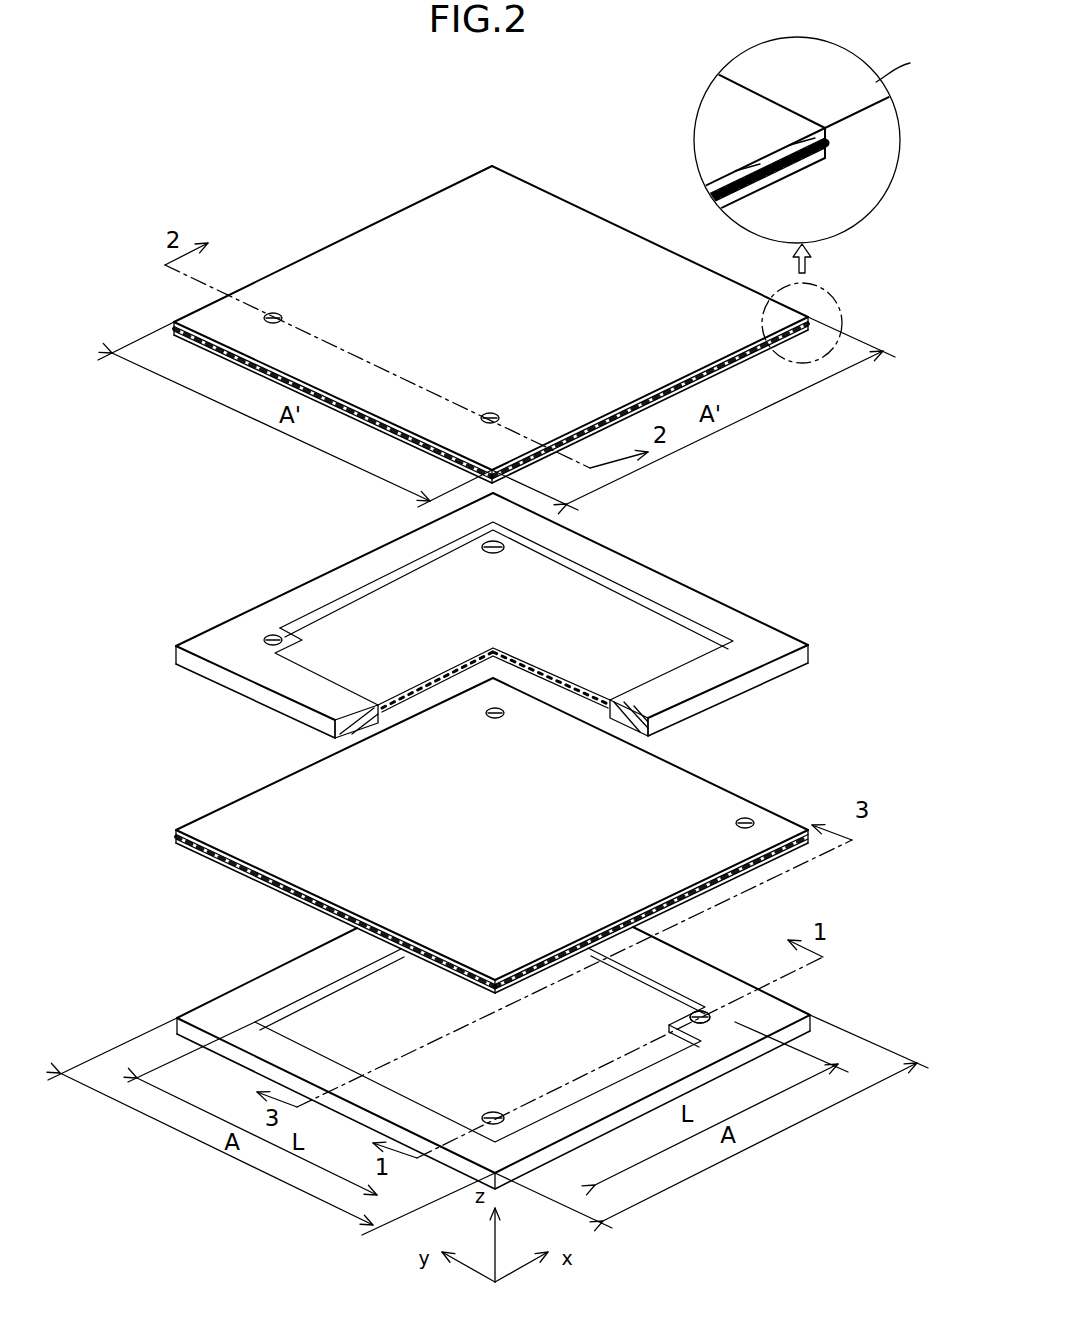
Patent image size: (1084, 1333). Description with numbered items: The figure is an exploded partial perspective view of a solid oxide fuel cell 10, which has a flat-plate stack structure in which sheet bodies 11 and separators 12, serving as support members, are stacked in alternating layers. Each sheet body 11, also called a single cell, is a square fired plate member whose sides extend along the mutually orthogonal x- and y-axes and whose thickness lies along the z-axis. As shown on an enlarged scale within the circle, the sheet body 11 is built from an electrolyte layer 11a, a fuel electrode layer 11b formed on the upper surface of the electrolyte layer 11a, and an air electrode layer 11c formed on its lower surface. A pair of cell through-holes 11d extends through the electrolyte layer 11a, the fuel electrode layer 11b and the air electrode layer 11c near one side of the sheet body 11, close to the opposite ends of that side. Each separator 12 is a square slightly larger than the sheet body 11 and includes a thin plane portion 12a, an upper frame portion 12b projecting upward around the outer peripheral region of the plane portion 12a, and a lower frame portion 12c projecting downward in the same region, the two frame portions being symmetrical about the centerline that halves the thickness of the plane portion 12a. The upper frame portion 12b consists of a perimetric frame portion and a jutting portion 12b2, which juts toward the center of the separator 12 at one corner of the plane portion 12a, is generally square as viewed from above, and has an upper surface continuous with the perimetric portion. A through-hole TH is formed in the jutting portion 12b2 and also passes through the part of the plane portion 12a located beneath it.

The fuel cell 10 is at (548, 144).
The sheet body 11 is at (598, 202).
The electrolyte layer 11a is at (829, 143).
The fuel electrode layer 11b is at (829, 131).
The air electrode layer 11c is at (829, 155).
The cell through-hole 11d is at (276, 313).
The separator 12 is at (701, 545).
The plane portion 12a is at (578, 586).
The upper frame portion 12b is at (734, 604).
The jutting portion 12b2 is at (705, 1008).
The lower frame portion 12c is at (741, 690).
The through-hole TH is at (712, 1024).